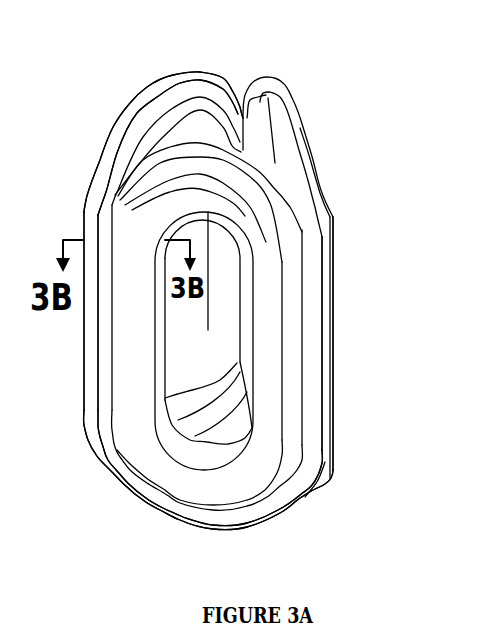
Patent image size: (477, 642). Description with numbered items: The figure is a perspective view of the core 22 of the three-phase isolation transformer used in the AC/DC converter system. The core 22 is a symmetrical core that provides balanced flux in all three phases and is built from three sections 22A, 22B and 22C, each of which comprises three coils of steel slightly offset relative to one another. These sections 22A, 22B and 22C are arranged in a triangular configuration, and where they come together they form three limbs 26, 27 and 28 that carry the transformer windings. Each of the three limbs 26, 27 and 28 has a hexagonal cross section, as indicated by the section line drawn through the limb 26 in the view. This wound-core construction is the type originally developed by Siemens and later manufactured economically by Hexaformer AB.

The core 22 is at (352, 153).
The section 22A is at (142, 500).
The section 22B is at (288, 96).
The section 22C is at (142, 100).
The limb 26 is at (90, 330).
The limb 27 is at (210, 310).
The limb 28 is at (322, 307).